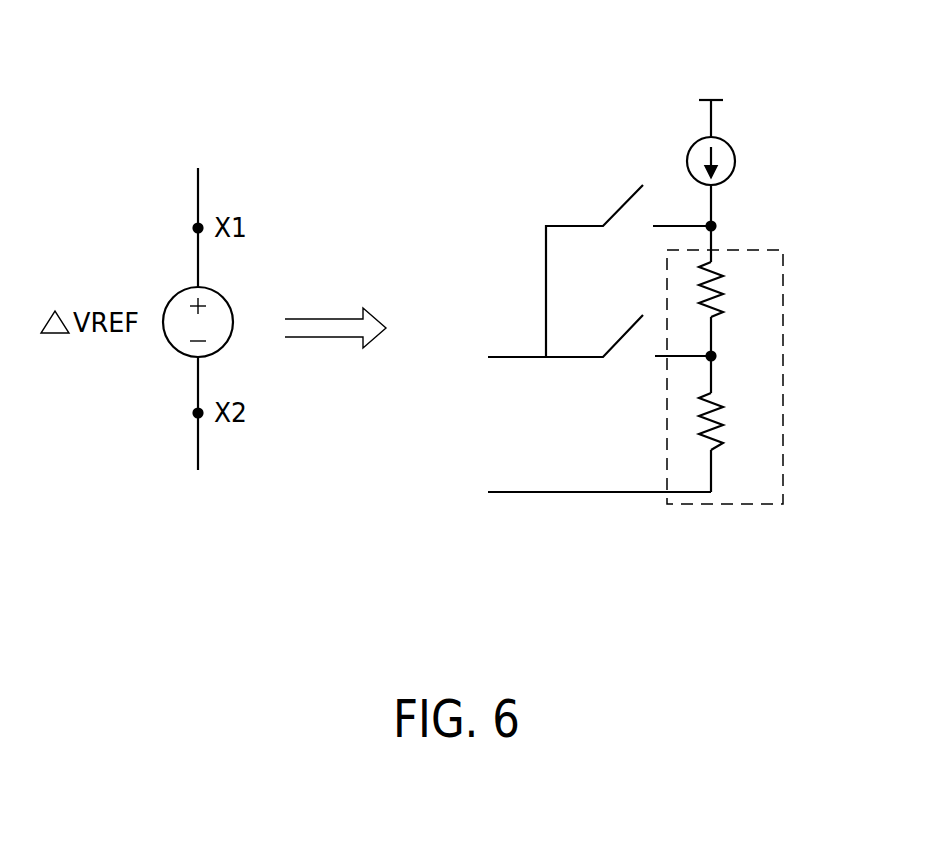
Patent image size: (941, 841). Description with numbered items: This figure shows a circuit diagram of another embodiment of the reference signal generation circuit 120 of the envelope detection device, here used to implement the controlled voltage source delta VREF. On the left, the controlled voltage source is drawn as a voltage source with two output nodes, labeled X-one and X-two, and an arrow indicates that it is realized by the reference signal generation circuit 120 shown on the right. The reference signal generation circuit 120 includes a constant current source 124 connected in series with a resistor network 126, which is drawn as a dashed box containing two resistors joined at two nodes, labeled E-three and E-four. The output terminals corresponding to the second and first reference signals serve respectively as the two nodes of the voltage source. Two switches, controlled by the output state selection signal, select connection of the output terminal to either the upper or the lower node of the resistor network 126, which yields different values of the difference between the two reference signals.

The reference signal generation circuit 120 is at (684, 280).
The constant current source 124 is at (727, 142).
The resistor network 126 is at (776, 250).